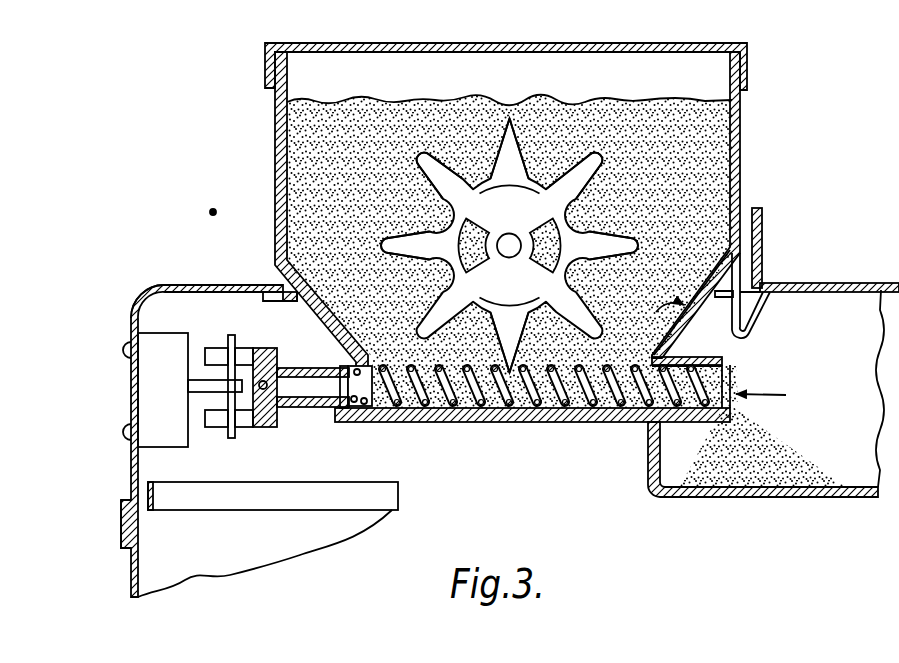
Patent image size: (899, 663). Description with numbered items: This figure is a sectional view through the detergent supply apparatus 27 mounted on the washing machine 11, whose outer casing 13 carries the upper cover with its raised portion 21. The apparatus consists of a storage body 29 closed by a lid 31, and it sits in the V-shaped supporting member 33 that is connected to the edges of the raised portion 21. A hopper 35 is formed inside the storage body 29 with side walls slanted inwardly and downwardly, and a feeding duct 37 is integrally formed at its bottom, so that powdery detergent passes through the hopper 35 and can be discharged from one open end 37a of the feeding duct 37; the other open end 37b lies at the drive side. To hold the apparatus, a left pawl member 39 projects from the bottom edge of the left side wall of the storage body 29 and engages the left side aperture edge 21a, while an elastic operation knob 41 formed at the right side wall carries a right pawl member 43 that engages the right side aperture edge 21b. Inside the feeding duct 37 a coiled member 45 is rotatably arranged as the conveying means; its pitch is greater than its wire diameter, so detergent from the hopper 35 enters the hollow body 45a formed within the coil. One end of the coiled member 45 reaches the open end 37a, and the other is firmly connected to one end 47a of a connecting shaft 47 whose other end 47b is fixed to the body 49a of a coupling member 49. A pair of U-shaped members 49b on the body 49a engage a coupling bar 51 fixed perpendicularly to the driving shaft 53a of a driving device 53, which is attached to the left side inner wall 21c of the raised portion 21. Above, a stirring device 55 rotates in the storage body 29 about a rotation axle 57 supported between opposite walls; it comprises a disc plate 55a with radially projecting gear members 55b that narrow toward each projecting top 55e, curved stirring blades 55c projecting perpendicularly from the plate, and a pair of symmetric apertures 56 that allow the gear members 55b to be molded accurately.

The washing machine 11 is at (119, 530).
The outer casing 13 is at (132, 575).
The raised portion 21 is at (169, 403).
The left side aperture edge 21a is at (267, 291).
The right side aperture edge 21b is at (763, 284).
The left side inner wall 21c is at (136, 304).
The detergent supply apparatus 27 is at (541, 183).
The storage body 29 is at (742, 128).
The lid 31 is at (736, 43).
The V-shaped supporting member 33 is at (490, 425).
The hopper 35 is at (686, 311).
The feeding duct 37 is at (528, 424).
The open end 37a is at (724, 361).
The open end 37b is at (342, 411).
The left pawl member 39 is at (285, 301).
The elastic operation knob 41 is at (764, 240).
The right pawl member 43 is at (770, 307).
The coiled member 45 is at (580, 405).
The hollow body 45a is at (781, 395).
The connecting shaft 47 is at (304, 384).
The one end of connecting shaft 47a is at (375, 410).
The other end of connecting shaft 47b is at (266, 381).
The coupling member 49 is at (244, 353).
The body of coupling member 49a is at (270, 428).
The U-shaped members 49b is at (216, 348).
The coupling bar 51 is at (230, 438).
The driving device 53 is at (164, 390).
The driving shaft 53a is at (212, 390).
The stirring device 55 is at (455, 278).
The disc plate 55a is at (538, 202).
The gear members 55b is at (624, 243).
The curved stirring blades 55c is at (524, 178).
The projecting top 55e is at (427, 160).
The apertures 56 is at (478, 272).
The rotation axle 57 is at (512, 234).